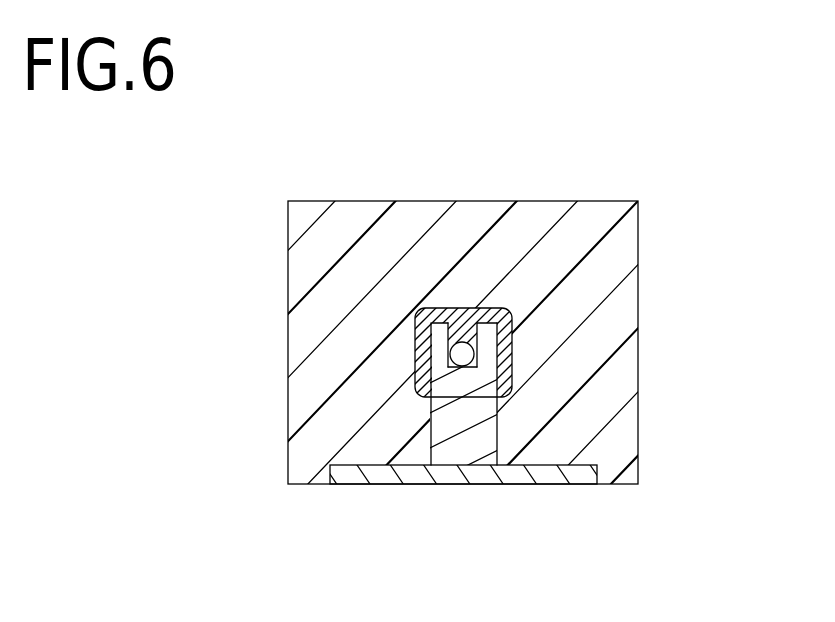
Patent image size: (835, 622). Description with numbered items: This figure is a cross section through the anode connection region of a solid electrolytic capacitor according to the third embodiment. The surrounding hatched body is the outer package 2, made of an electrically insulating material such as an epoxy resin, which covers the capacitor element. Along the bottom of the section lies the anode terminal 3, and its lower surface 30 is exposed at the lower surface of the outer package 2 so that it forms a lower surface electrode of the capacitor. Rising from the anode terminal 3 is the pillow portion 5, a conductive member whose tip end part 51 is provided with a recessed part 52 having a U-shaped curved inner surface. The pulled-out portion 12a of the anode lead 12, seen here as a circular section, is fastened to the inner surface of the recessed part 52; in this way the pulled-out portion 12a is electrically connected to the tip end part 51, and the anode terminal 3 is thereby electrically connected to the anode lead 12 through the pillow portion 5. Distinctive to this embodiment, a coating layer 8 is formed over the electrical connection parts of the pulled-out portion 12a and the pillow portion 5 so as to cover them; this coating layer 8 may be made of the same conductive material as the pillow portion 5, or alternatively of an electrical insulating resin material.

The outer package 2 is at (617, 249).
The anode terminal 3 is at (510, 473).
The lower surface of the anode terminal 30 is at (448, 487).
The pillow portion 5 is at (450, 395).
The coating layer 8 is at (413, 266).
The tip end part 51 is at (490, 320).
The recessed part 52 is at (450, 322).
The pulled-out portion 12a is at (462, 359).
The anode lead 12 is at (609, 359).